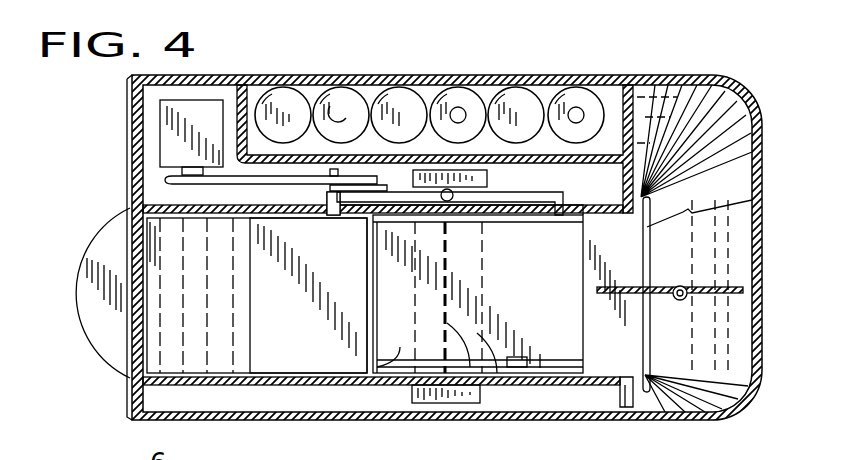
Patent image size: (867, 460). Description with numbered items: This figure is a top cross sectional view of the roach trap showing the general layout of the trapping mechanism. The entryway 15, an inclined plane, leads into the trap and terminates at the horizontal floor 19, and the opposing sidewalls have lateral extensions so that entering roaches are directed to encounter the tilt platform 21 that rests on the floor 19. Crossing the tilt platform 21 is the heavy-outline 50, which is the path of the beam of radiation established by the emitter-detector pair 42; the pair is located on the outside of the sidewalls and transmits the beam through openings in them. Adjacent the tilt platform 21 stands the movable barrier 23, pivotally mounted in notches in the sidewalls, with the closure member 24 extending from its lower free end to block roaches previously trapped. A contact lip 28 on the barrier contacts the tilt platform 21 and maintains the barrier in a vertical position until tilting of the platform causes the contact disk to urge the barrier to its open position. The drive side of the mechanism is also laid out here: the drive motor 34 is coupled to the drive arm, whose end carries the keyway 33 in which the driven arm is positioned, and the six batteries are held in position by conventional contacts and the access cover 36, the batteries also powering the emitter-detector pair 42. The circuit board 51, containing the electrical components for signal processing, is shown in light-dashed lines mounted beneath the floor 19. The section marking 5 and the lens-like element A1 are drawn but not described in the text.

The entryway 15 is at (728, 252).
The floor 19 is at (623, 247).
The tilt platform 21 is at (573, 385).
The movable barrier 23 is at (367, 410).
The closure member 24 is at (262, 411).
The contact lip 28 is at (415, 427).
The keyway 33 is at (170, 181).
The drive motor 34 is at (170, 142).
The access cover 36 is at (317, 77).
The emitter-detector pair 42 is at (430, 170).
The heavy-outline 50 is at (437, 392).
The circuit board 51 is at (500, 420).
The objective lens A1 is at (98, 288).
The section line 5- 5 is at (507, 53).